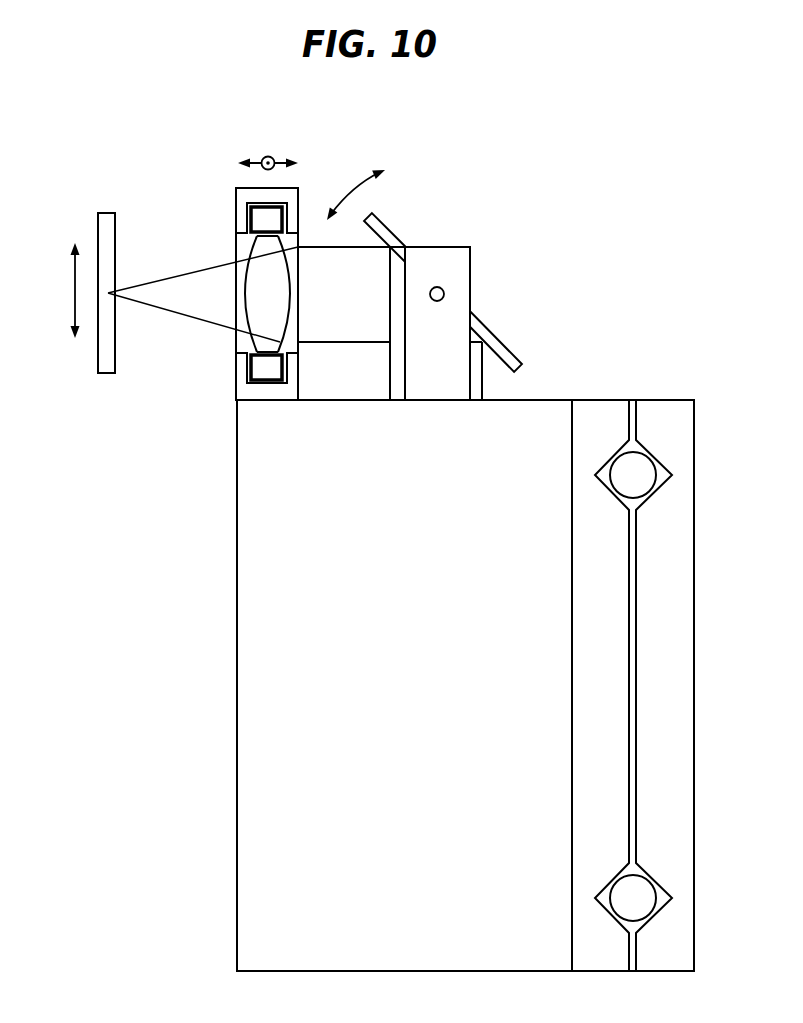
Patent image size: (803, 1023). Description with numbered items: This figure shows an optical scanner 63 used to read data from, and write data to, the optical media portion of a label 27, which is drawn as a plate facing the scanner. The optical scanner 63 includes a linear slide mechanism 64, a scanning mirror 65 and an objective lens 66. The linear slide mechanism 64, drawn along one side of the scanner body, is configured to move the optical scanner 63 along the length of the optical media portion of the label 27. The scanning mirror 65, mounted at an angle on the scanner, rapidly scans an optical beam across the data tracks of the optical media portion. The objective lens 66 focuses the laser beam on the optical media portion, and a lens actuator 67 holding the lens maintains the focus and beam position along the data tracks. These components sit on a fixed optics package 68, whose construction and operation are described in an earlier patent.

The label 27 is at (98, 230).
The optical scanner 63 is at (388, 685).
The linear slide mechanism 64 is at (673, 578).
The scanning mirror 65 is at (508, 342).
The objective lens 66 is at (257, 273).
The lens actuator 67 is at (292, 197).
The fixed optics package 68 is at (267, 802).